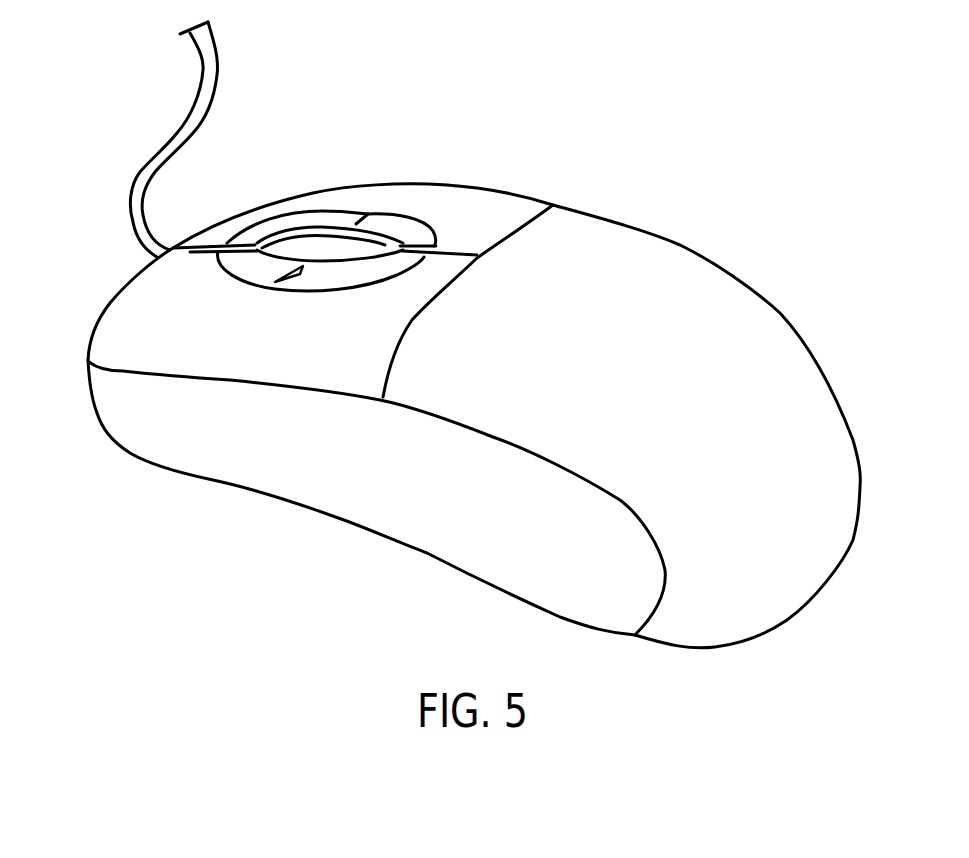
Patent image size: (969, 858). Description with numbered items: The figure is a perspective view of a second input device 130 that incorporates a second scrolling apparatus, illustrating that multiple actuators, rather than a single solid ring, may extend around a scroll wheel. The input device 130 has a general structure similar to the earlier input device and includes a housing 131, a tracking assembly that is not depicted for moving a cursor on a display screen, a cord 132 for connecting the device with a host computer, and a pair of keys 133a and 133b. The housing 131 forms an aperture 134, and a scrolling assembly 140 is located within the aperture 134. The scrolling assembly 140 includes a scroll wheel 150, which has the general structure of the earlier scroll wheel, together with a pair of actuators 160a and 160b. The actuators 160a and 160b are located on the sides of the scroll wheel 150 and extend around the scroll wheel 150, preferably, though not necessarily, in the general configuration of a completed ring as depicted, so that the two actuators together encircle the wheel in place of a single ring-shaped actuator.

The input device 130 is at (613, 173).
The housing 131 is at (423, 517).
The cord 132 is at (222, 67).
The key 133a is at (130, 308).
The key 133b is at (470, 212).
The aperture 134 is at (278, 280).
The scrolling assembly 140 is at (268, 212).
The scroll wheel 150 is at (317, 240).
The actuator 160a is at (333, 275).
The actuator 160b is at (382, 215).